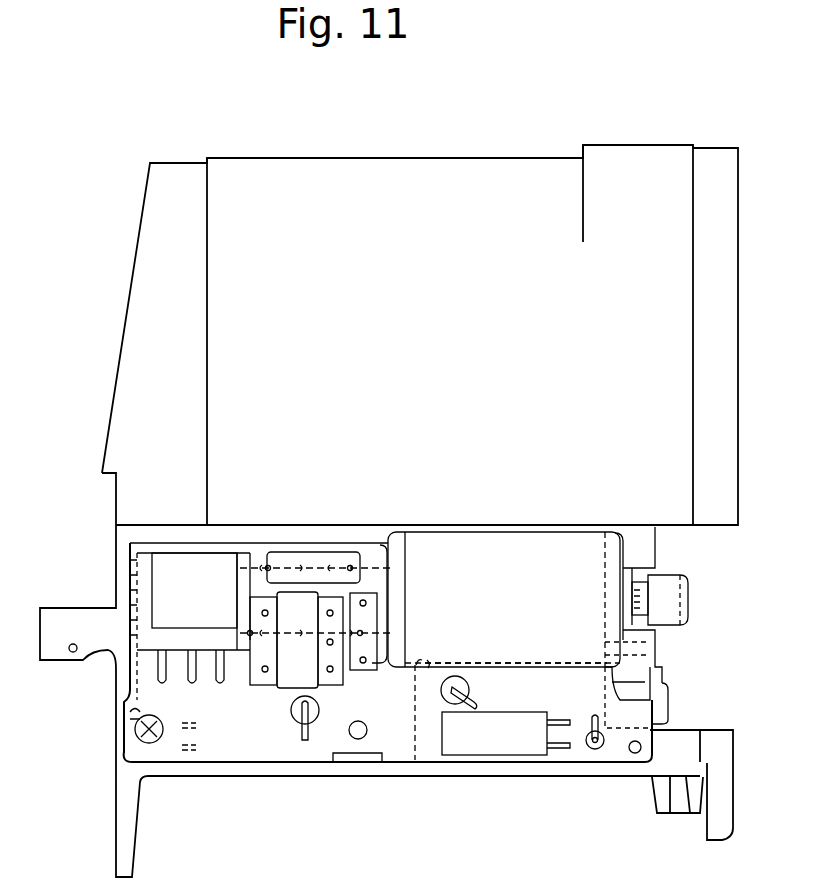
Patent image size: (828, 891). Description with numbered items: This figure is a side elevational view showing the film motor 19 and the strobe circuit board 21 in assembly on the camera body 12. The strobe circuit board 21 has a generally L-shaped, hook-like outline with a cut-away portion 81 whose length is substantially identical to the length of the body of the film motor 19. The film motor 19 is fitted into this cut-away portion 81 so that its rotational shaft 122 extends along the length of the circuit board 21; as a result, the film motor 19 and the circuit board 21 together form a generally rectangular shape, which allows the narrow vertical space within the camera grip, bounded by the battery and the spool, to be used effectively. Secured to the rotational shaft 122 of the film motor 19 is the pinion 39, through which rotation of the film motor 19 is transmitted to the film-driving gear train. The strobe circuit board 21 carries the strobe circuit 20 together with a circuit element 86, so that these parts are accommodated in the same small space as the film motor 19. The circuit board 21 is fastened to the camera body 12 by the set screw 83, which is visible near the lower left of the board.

The camera body 12 is at (246, 162).
The film motor 19 is at (467, 543).
The strobe circuit 20 is at (300, 628).
The strobe circuit board 21 is at (247, 745).
The pinion 39 is at (667, 580).
The cut-away portion 81 is at (415, 760).
The set screw 83 is at (149, 743).
The circuit element 86 is at (292, 723).
The rotational shaft 122 is at (645, 587).